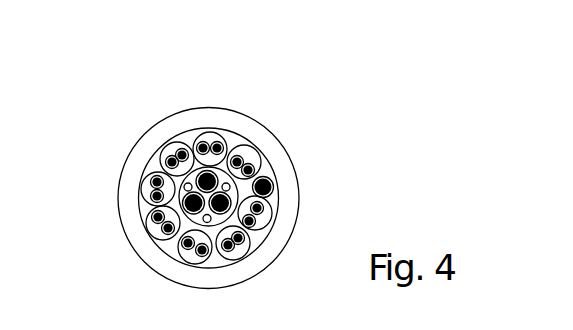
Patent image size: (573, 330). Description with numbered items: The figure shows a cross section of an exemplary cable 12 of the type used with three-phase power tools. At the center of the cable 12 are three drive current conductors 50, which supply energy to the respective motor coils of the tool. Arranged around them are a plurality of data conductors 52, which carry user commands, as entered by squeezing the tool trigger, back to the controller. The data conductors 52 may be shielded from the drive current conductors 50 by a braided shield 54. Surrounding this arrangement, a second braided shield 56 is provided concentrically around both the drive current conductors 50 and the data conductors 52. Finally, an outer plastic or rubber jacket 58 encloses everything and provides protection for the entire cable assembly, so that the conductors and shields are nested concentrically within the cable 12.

The cable 12 is at (207, 91).
The drive current conductors 50 is at (188, 215).
The data conductors 52 is at (153, 183).
The braided shield 54 is at (250, 199).
The second braided shield 56 is at (157, 153).
The outer jacket 58 is at (270, 130).